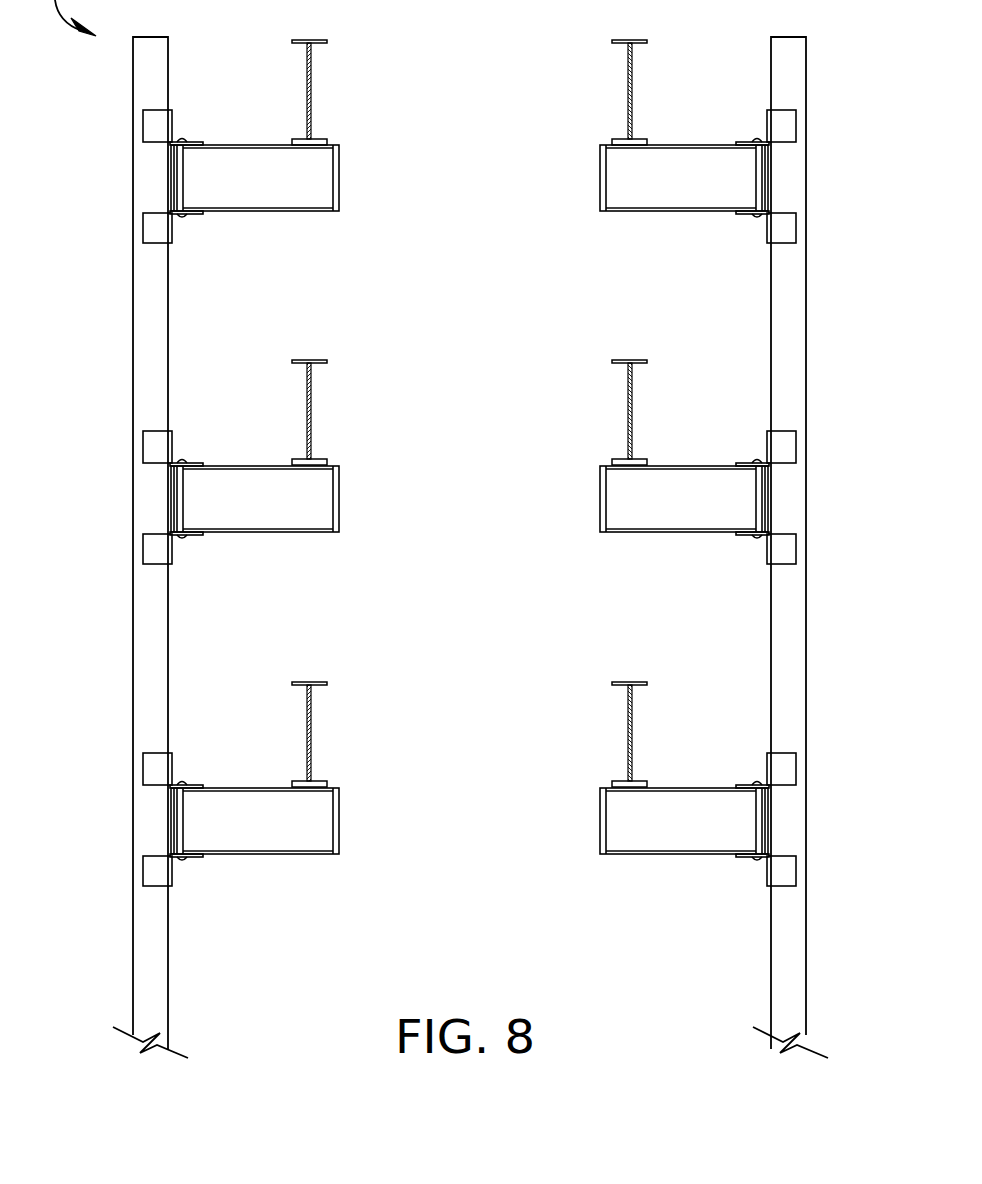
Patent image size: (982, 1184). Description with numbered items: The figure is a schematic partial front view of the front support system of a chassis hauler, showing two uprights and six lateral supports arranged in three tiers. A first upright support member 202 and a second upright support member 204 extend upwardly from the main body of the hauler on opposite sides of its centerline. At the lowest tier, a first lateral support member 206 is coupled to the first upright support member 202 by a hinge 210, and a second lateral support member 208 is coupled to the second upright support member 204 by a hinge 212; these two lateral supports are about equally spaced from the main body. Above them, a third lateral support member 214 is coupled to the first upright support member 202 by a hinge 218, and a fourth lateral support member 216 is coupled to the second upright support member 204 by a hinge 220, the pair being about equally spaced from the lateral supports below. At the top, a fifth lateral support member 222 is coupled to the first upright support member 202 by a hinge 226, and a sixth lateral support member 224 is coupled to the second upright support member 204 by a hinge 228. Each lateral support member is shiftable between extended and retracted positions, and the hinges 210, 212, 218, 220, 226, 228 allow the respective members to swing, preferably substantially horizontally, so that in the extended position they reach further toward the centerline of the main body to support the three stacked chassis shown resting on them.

The first upright support member 202 is at (147, 303).
The second upright support member 204 is at (792, 303).
The first lateral support member 206 is at (320, 820).
The second lateral support member 208 is at (618, 820).
The hinge 210 is at (158, 765).
The hinge 212 is at (783, 764).
The third lateral support member 214 is at (320, 498).
The fourth lateral support member 216 is at (618, 498).
The hinge 218 is at (158, 443).
The hinge 220 is at (783, 442).
The fifth lateral support member 222 is at (320, 177).
The sixth lateral support member 224 is at (618, 177).
The hinge 226 is at (158, 122).
The hinge 228 is at (783, 121).